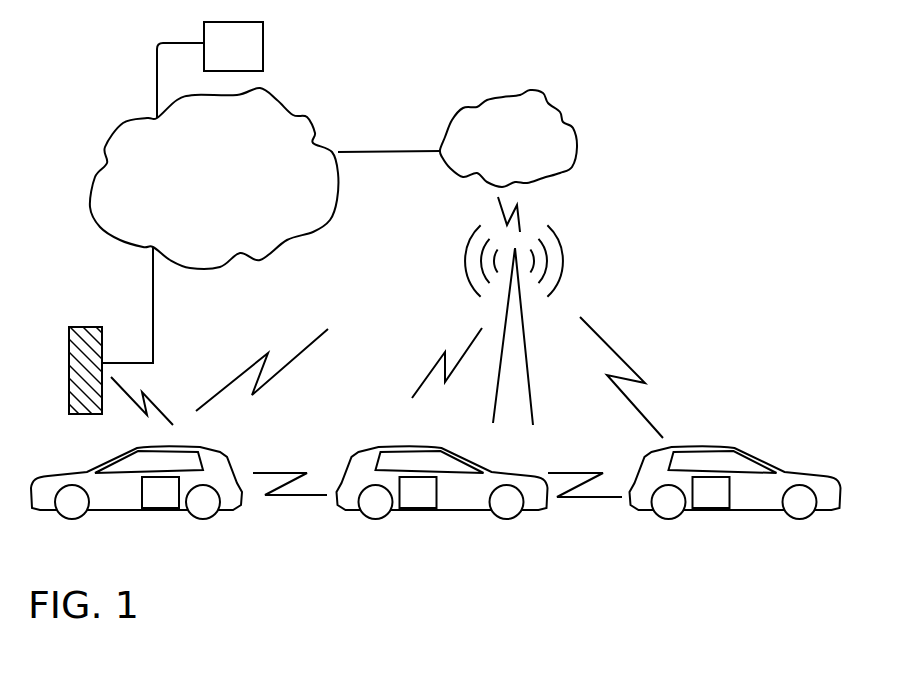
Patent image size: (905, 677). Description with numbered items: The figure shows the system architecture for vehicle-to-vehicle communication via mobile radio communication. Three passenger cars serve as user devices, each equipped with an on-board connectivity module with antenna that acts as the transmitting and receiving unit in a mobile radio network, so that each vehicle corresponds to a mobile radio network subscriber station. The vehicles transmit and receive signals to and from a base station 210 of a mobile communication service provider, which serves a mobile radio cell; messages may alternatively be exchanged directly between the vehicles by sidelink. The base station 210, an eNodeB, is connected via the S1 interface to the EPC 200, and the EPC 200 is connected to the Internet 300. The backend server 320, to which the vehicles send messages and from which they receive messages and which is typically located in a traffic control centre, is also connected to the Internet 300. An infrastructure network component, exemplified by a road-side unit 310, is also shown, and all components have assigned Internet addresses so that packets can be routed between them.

The EPC 200 is at (525, 110).
The base station 210 is at (520, 313).
The Internet 300 is at (288, 133).
The road-side unit 310 is at (90, 328).
The backend server 320 is at (262, 37).